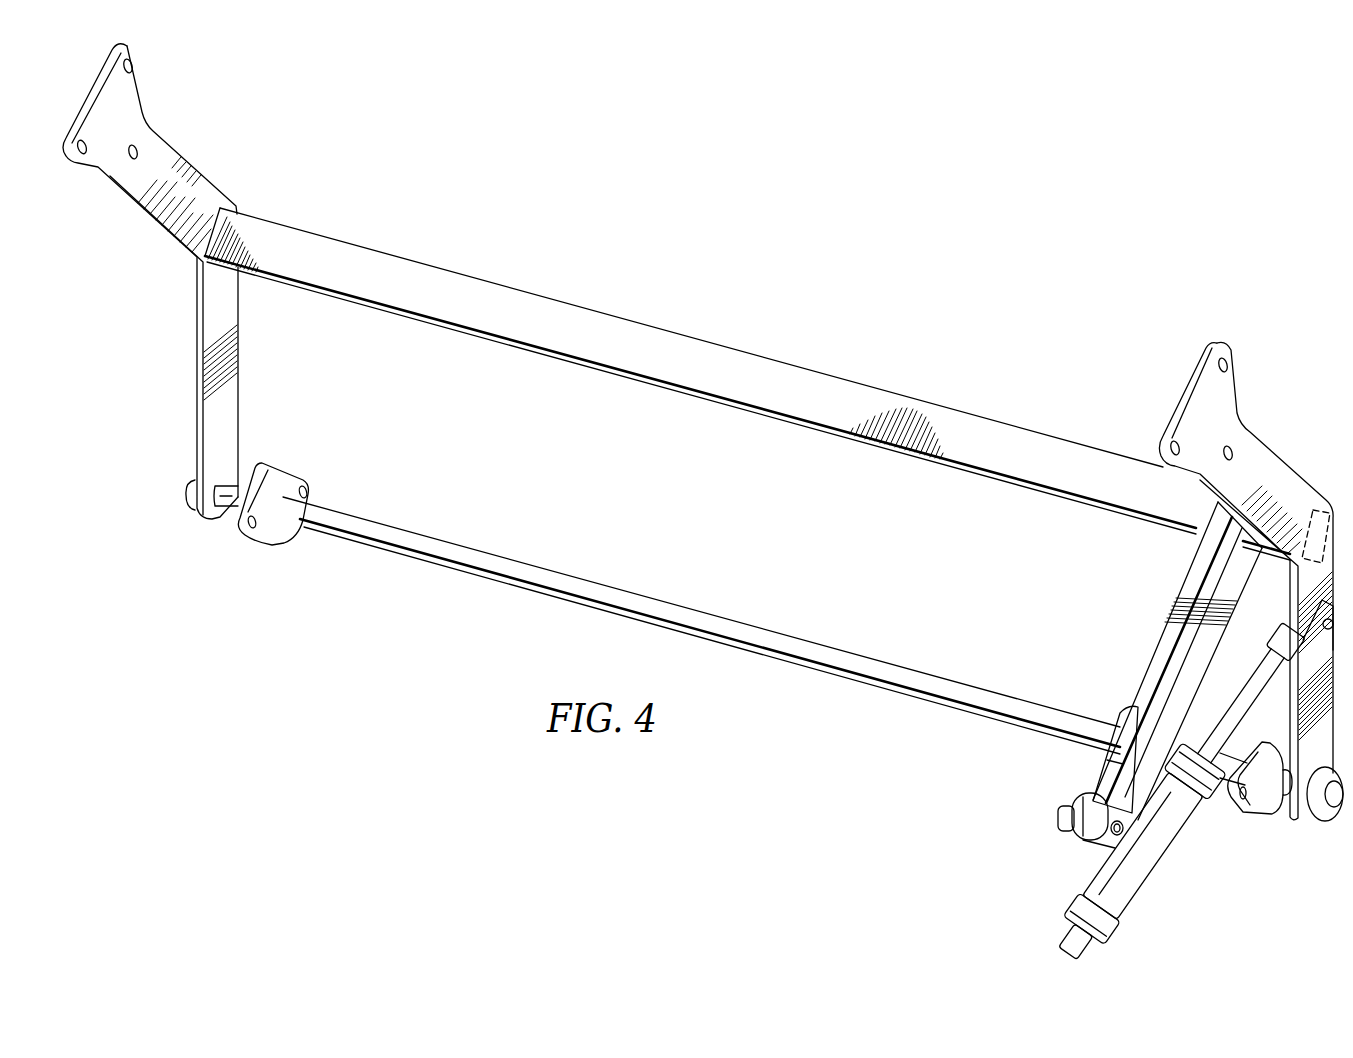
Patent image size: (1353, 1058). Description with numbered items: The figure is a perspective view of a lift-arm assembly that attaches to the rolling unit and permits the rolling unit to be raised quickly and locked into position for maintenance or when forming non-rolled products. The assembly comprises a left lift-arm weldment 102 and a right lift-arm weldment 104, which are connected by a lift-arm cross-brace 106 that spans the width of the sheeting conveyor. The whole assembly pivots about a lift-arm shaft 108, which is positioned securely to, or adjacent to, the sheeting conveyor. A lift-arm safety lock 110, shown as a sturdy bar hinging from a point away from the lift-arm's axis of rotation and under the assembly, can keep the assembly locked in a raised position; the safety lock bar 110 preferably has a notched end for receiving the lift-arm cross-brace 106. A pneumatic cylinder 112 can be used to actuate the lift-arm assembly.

The left lift-arm weldment 102 is at (158, 158).
The right lift-arm weldment 104 is at (1253, 460).
The lift-arm cross-brace 106 is at (688, 357).
The lift-arm shaft 108 is at (723, 625).
The lift-arm safety lock 110 is at (1158, 678).
The pneumatic cylinder 112 is at (1163, 848).